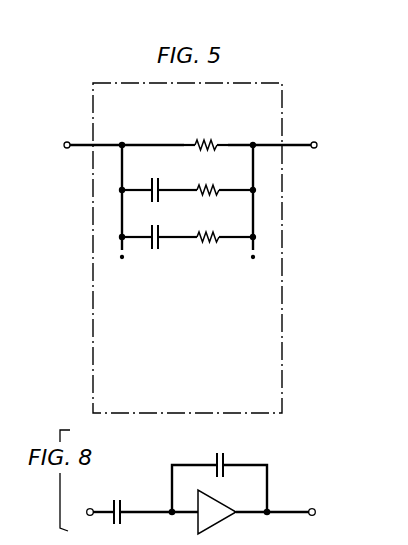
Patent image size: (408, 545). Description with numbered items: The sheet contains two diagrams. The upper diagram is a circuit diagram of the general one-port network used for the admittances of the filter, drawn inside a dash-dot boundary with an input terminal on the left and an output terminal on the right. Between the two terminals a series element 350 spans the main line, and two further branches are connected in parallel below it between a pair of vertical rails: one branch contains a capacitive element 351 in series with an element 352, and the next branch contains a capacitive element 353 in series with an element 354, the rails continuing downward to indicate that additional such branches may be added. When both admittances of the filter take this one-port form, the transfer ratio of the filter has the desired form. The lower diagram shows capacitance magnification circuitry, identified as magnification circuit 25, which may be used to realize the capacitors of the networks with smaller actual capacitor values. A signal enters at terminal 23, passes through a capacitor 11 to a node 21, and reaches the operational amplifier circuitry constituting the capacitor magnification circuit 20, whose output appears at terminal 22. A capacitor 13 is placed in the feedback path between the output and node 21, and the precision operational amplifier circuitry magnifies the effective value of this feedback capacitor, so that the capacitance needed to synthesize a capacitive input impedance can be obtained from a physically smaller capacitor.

In FIG. 5, the resistor 350 is at (206, 135).
In FIG. 5, the capacitor 351 is at (156, 182).
In FIG. 5, the resistor 352 is at (208, 180).
In FIG. 5, the capacitor 353 is at (156, 228).
In FIG. 5, the resistor 354 is at (208, 227).
In FIG. 8, the input capacitor 11 is at (122, 505).
In FIG. 8, the feedback capacitor 13 is at (222, 458).
In FIG. 8, the capacitor magnification circuit 20 is at (222, 524).
In FIG. 8, the input node 21 is at (173, 524).
In FIG. 8, the output terminal 22 is at (293, 502).
In FIG. 8, the input terminal 23 is at (87, 501).
In FIG. 8, the capacitance magnification circuit 25 is at (200, 489).